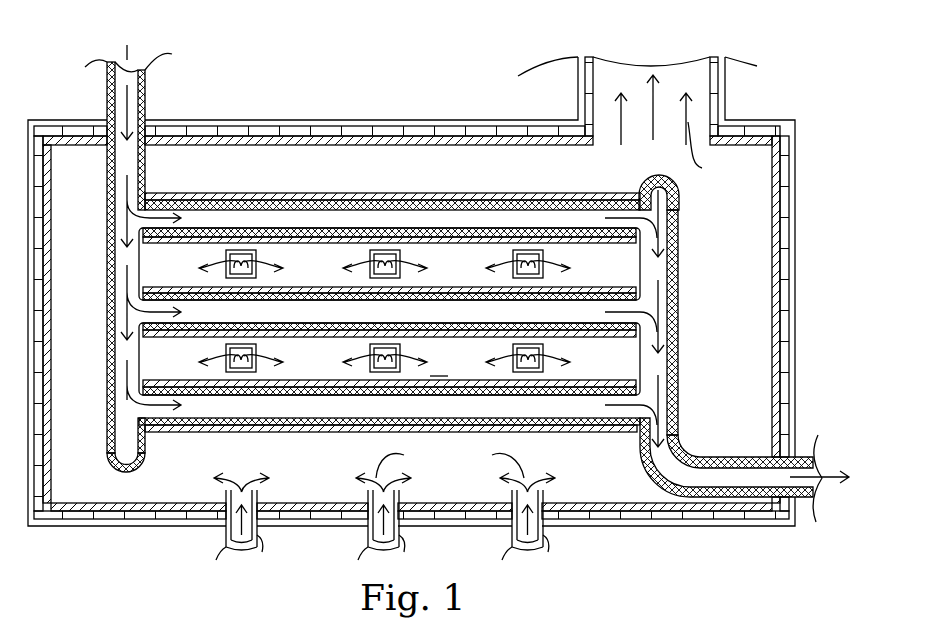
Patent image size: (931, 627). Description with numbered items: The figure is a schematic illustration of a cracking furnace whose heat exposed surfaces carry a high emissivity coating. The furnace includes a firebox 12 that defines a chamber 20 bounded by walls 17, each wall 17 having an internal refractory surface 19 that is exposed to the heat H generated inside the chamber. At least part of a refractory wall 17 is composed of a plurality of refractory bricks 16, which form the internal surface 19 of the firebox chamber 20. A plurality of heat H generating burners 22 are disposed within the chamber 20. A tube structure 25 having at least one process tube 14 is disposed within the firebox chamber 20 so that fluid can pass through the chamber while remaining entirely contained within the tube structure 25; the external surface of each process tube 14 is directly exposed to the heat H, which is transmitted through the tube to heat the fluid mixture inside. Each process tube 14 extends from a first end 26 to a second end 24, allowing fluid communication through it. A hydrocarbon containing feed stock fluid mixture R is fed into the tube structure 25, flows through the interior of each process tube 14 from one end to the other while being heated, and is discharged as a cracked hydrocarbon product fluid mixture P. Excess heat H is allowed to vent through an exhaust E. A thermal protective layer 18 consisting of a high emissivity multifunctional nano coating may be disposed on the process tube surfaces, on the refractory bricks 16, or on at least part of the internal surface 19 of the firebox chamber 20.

The firebox 12 is at (323, 74).
The process tube 14 is at (610, 432).
The refractory bricks 16 is at (115, 520).
The wall 17 is at (795, 238).
The thermal protective layer 18 is at (94, 417).
The internal refractory surface 19 is at (51, 240).
The chamber 20 is at (437, 120).
The burners 22 is at (372, 258).
The second end 24 is at (680, 328).
The tube structure 25 is at (575, 175).
The first end 26 is at (107, 285).
The feed stock fluid mixture R is at (135, 100).
The exhaust E is at (578, 80).
The heat H is at (547, 300).
The cracked hydrocarbon product fluid mixture P is at (819, 478).